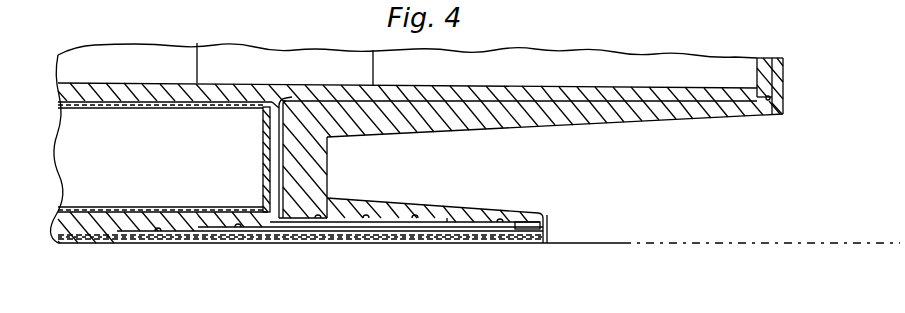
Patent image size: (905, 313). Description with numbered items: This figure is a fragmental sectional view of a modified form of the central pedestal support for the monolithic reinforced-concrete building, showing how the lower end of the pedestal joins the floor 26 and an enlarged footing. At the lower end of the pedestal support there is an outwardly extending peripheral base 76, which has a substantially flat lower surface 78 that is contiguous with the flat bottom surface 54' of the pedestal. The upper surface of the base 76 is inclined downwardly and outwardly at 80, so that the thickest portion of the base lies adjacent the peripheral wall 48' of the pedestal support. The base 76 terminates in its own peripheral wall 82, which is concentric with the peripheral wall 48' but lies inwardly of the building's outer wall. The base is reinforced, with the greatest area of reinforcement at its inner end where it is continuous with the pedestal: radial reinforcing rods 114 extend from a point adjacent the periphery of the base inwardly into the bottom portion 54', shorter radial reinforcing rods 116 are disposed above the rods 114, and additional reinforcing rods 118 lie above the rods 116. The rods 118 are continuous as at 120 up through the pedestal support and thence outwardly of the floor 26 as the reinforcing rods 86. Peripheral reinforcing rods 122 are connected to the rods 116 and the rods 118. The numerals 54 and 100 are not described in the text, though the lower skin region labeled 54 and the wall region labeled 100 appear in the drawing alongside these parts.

The floor 26 is at (661, 126).
The peripheral wall of the pedestal support 48' is at (332, 159).
The lower skin 54 is at (297, 248).
The flat bottom surface of the pedestal support 54' is at (407, 54).
The peripheral base 76 is at (547, 228).
The flat lower surface 78 is at (460, 234).
The inclined upper surface 80 is at (445, 210).
The peripheral wall of the base 82 is at (548, 244).
The reinforcing rods 86 is at (592, 98).
The wall 100 is at (403, 121).
The radial reinforcing rods 114 is at (390, 233).
The radial reinforcing rods 116 is at (308, 224).
The reinforcing rods 118 is at (387, 216).
The continuous portion of reinforcing rods 120 is at (281, 162).
The peripheral reinforcing rods 122 is at (464, 224).